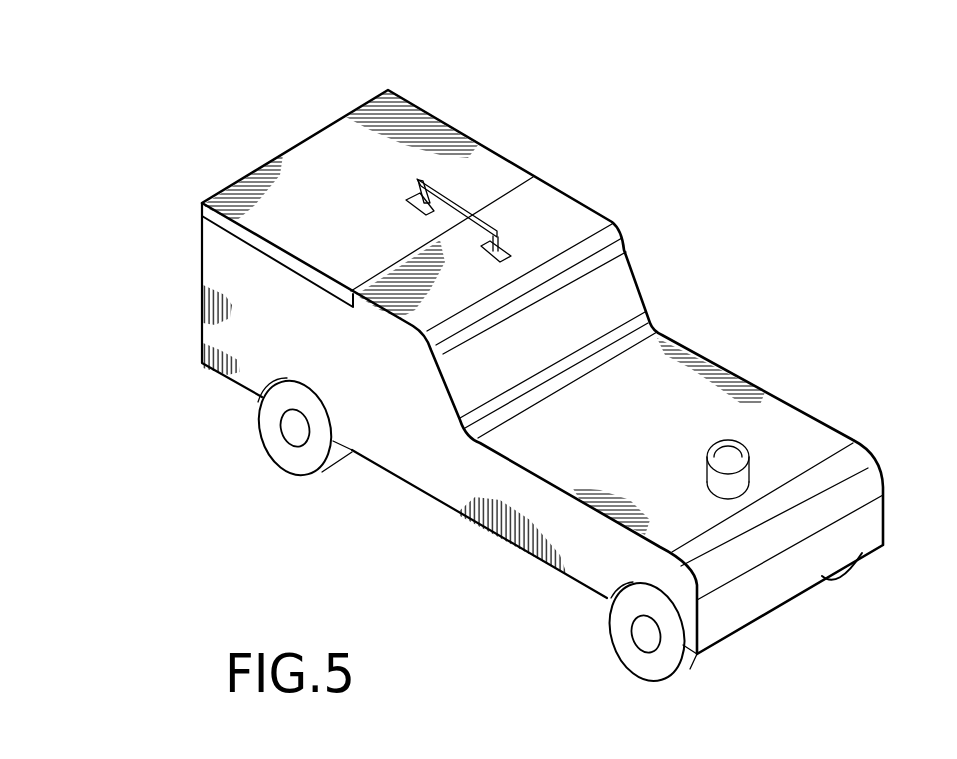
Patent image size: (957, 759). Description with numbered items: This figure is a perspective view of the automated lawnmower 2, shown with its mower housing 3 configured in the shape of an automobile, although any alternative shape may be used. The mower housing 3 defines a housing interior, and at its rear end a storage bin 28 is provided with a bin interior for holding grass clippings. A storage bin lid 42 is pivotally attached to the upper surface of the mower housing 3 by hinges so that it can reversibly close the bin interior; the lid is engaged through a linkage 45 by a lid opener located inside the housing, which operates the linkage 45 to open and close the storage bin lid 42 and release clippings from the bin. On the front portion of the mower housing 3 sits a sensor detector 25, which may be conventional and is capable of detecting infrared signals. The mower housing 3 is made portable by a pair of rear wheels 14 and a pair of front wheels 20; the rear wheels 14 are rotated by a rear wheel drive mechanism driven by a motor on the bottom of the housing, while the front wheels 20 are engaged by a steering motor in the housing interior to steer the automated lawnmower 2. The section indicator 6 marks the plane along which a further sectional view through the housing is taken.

The automated lawnmower 2 is at (714, 98).
The mower housing 3 is at (645, 270).
The section line 6- 6 is at (491, 214).
The rear wheels 14 is at (277, 452).
The front wheels 20 is at (695, 667).
The sensor detector 25 is at (740, 440).
The storage bin 28 is at (195, 261).
The storage bin lid 42 is at (343, 130).
The linkage 45 is at (452, 190).